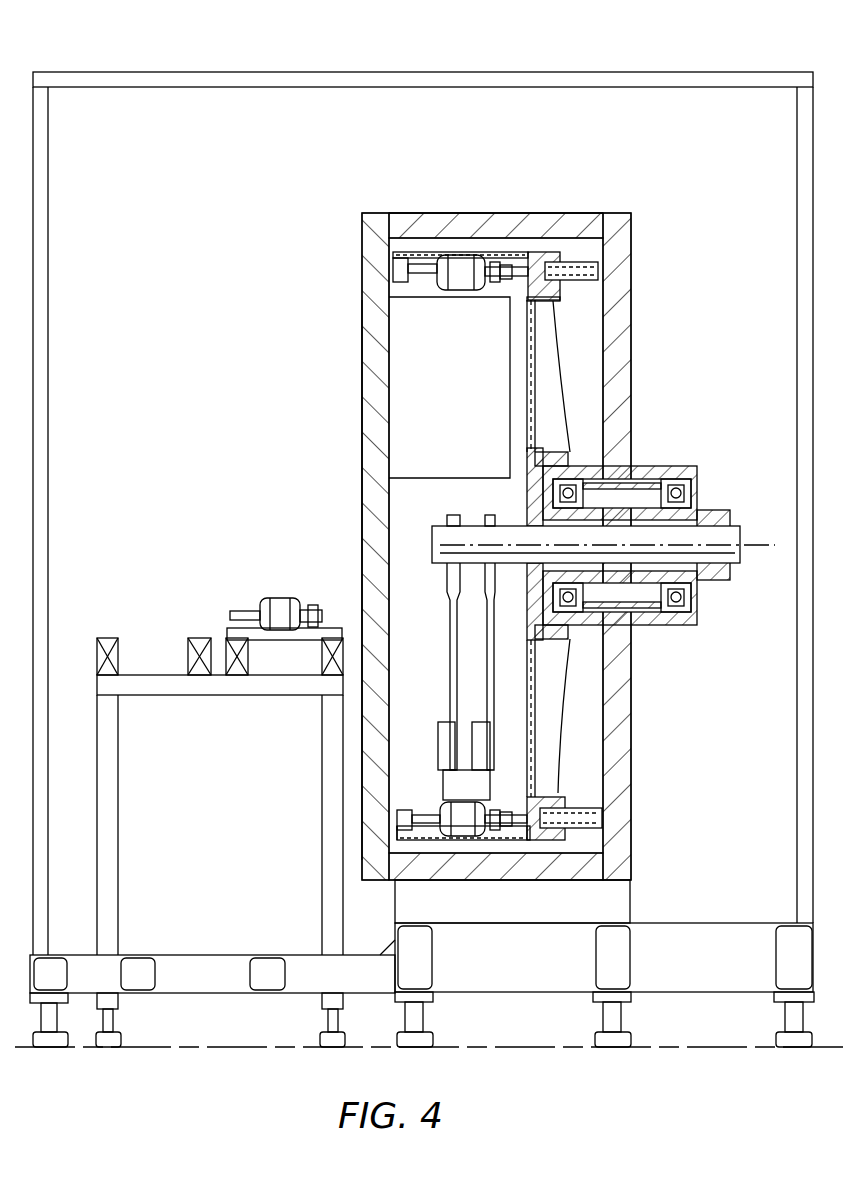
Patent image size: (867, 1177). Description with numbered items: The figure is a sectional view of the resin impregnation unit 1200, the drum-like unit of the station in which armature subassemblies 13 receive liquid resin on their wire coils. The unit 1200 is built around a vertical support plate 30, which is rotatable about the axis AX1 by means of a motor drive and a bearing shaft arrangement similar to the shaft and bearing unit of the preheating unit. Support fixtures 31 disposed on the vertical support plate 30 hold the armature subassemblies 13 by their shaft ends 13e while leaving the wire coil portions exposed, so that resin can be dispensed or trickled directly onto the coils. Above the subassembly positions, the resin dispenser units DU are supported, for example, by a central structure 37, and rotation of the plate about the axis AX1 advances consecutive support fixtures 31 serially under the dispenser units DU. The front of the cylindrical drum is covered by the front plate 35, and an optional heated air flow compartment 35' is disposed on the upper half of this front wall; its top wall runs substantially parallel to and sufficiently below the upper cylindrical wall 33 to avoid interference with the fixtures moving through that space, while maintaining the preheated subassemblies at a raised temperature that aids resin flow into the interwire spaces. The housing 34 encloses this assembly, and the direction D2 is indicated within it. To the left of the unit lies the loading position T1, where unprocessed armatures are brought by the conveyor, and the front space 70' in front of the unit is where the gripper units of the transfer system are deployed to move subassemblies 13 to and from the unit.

The resin impregnation unit 1200 is at (493, 58).
The front space 70' is at (212, 752).
The loading position T1 is at (286, 586).
The housing 34 is at (632, 272).
The upper cylindrical wall 33 is at (508, 215).
The front plate 35 is at (344, 580).
The heated air flow compartment 35' is at (398, 387).
The support fixture 31 is at (455, 252).
The direction D2 is at (465, 303).
The vertical support plate 30 is at (556, 415).
The axis AX1 is at (748, 545).
The central structure 37 is at (452, 597).
The dispenser unit DU is at (478, 722).
The armature subassembly 13 is at (465, 830).
The shaft end 13e is at (410, 812).